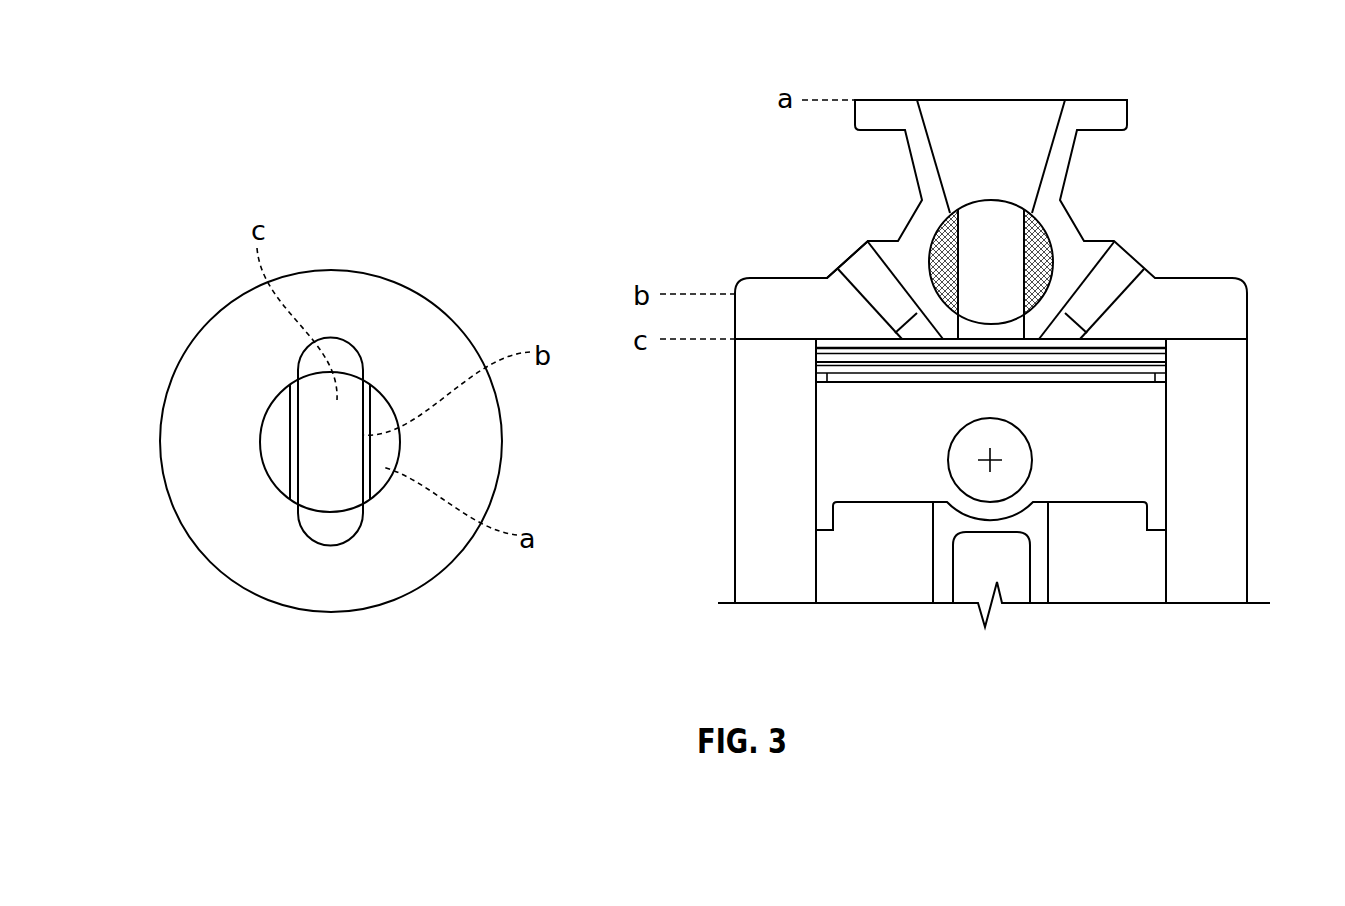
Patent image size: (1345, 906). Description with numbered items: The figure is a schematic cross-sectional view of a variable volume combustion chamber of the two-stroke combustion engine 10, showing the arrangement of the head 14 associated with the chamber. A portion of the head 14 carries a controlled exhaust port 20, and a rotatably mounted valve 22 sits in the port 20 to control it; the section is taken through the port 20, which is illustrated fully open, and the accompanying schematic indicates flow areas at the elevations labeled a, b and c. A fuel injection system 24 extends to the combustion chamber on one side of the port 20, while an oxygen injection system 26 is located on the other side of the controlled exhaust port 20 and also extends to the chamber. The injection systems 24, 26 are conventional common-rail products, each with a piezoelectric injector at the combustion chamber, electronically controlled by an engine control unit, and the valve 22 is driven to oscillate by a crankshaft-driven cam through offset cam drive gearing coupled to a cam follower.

The combustion engine 10 is at (1247, 378).
The head 14 is at (758, 303).
The controlled exhaust port 20 is at (993, 155).
The rotatably mounted valve 22 is at (1003, 242).
The fuel injection system 24 is at (857, 268).
The oxygen injection system 26 is at (1120, 270).